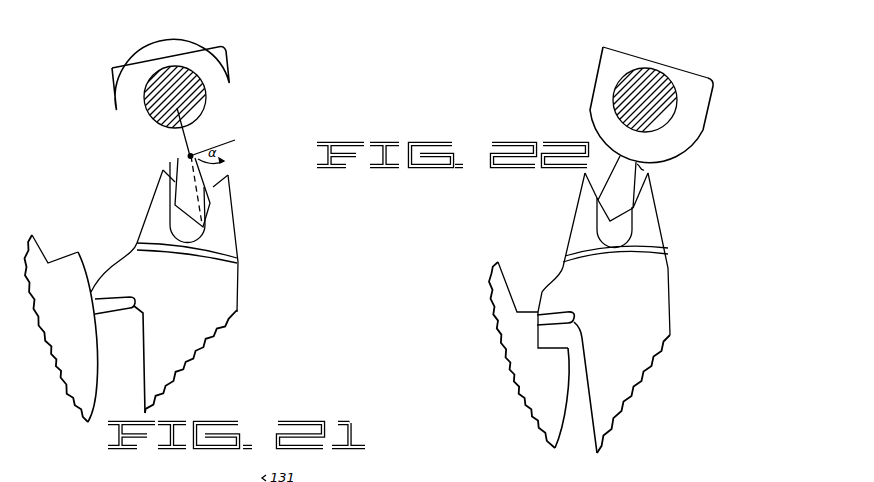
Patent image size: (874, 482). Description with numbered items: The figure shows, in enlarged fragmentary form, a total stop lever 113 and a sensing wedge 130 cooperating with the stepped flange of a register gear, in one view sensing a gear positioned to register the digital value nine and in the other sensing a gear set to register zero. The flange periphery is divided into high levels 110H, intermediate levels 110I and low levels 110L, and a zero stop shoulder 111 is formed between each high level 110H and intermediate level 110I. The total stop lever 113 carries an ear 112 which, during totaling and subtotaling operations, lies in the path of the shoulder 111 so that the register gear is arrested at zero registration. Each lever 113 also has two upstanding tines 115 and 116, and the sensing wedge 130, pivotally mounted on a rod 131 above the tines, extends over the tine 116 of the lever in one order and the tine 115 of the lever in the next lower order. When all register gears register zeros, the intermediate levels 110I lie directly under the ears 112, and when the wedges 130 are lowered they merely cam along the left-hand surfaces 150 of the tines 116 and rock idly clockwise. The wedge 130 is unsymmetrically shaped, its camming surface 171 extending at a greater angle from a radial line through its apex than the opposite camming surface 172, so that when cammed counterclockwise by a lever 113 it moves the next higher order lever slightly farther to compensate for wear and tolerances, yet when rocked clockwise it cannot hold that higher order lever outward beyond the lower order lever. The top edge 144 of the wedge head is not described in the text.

In FIG. 21, the sensing wedge 130 is at (228, 105).
In FIG. 22, the sensing wedge 130 is at (694, 119).
In FIG. 21, the rod 131 is at (162, 72).
In FIG. 22, the rod 131 is at (648, 82).
In FIG. 21, the top edge of head 144 is at (199, 48).
In FIG. 22, the top edge of head 144 is at (693, 78).
In FIG. 21, the tine 115 is at (160, 196).
In FIG. 22, the tine 115 is at (578, 222).
In FIG. 21, the tine 116 is at (228, 217).
In FIG. 22, the tine 116 is at (648, 220).
In FIG. 21, the ear 112 is at (118, 300).
In FIG. 22, the ear 112 is at (565, 311).
In FIG. 21, the total stop lever 113 is at (204, 328).
In FIG. 22, the total stop lever 113 is at (658, 298).
In FIG. 21, the intermediate level 110I is at (40, 241).
In FIG. 22, the intermediate level 110I is at (537, 333).
In FIG. 21, the high level 110H is at (97, 382).
In FIG. 22, the high level 110H is at (571, 373).
In FIG. 22, the low level 110L is at (511, 284).
In FIG. 21, the zero stop shoulder 111 is at (39, 284).
In FIG. 22, the zero stop shoulder 111 is at (529, 362).
In FIG. 22, the left-hand surface 150 is at (644, 170).
In FIG. 22, the camming surface 171 is at (632, 217).
In FIG. 22, the camming surface 172 is at (599, 198).